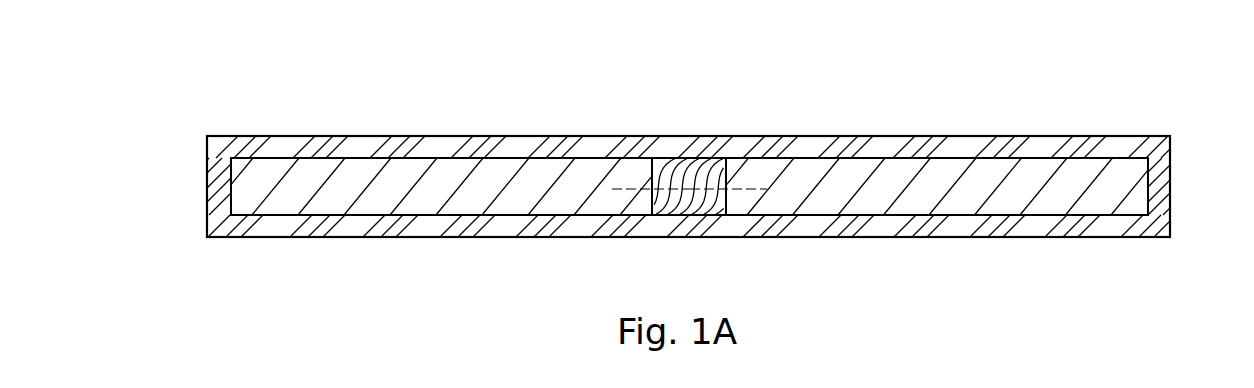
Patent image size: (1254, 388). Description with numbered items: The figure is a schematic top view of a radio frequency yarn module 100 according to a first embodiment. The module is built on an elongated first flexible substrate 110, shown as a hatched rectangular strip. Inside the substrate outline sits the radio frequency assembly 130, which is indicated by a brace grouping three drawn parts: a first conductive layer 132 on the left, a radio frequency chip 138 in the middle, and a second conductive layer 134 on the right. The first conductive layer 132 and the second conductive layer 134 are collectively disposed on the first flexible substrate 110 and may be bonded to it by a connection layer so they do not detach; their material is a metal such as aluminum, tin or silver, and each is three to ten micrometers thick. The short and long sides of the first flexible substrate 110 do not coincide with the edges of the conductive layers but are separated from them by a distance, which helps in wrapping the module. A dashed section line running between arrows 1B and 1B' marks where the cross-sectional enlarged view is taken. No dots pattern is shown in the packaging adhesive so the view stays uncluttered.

The radio frequency yarn module 100 is at (93, 42).
The first flexible substrate 110 is at (874, 148).
The radio frequency assembly 130 is at (802, 78).
The first conductive layer 132 is at (612, 178).
The radio frequency chip 138 is at (688, 178).
The second conductive layer 134 is at (783, 178).
The section line 1B is at (641, 236).
The section line 1B' is at (739, 236).